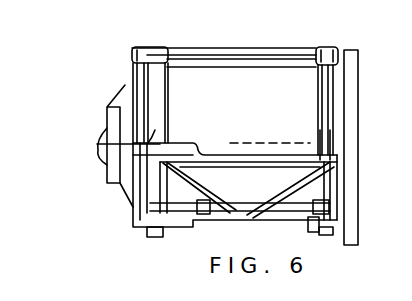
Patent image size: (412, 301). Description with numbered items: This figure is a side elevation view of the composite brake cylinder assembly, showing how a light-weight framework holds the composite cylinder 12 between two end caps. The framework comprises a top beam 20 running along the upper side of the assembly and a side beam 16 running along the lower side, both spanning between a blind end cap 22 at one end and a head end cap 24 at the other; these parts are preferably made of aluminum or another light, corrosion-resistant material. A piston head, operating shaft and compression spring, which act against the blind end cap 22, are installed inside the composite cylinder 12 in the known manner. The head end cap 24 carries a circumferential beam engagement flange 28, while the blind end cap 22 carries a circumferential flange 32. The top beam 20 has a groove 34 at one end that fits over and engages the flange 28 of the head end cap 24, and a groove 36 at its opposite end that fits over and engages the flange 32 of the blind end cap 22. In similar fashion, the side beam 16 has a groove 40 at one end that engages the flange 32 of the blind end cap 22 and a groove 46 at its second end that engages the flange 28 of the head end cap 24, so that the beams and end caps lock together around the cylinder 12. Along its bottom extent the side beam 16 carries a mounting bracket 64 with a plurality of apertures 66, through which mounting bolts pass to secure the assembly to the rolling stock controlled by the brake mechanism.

The composite cylinder 12 is at (246, 117).
The side beam 16 is at (138, 47).
The top beam 20 is at (240, 50).
The blind end cap 22 is at (123, 90).
The head end cap 24 is at (358, 80).
The circumferential beam engagement flange 28 is at (318, 103).
The circumferential flange 32 is at (168, 50).
The groove 34 is at (318, 50).
The groove 36 is at (152, 47).
The groove 40 is at (158, 134).
The groove 46 is at (333, 134).
The mounting bracket 64 is at (300, 192).
The apertures 66 is at (258, 182).